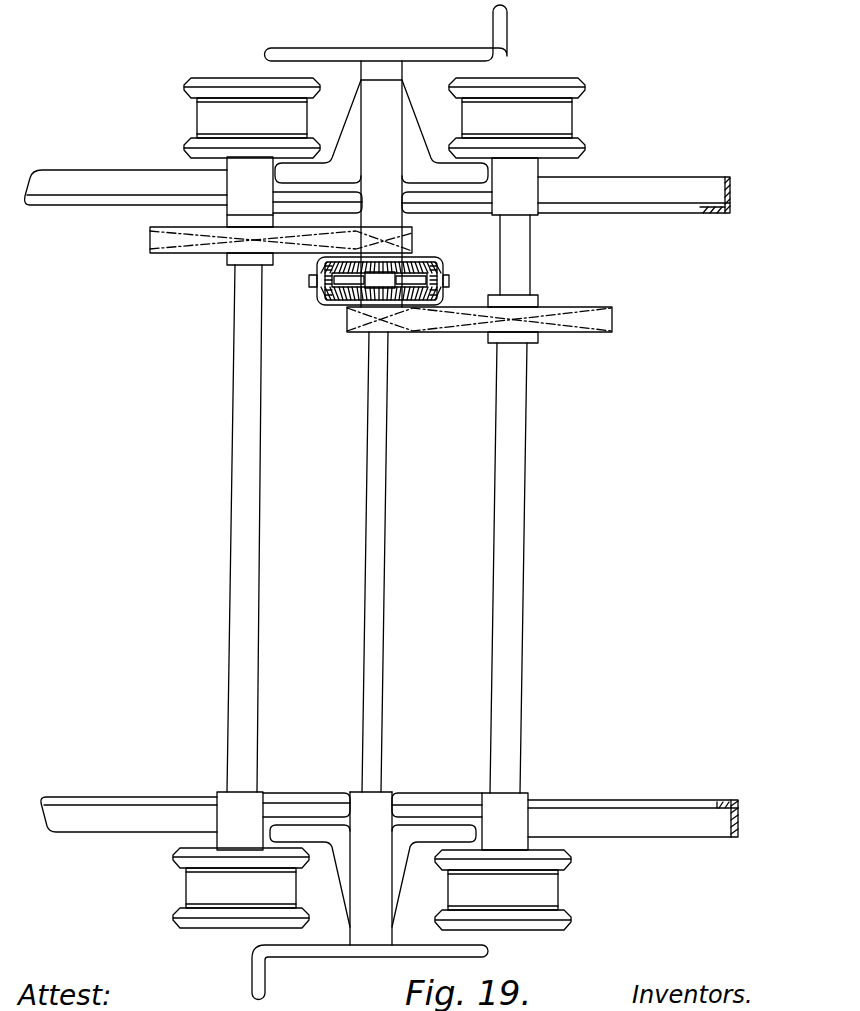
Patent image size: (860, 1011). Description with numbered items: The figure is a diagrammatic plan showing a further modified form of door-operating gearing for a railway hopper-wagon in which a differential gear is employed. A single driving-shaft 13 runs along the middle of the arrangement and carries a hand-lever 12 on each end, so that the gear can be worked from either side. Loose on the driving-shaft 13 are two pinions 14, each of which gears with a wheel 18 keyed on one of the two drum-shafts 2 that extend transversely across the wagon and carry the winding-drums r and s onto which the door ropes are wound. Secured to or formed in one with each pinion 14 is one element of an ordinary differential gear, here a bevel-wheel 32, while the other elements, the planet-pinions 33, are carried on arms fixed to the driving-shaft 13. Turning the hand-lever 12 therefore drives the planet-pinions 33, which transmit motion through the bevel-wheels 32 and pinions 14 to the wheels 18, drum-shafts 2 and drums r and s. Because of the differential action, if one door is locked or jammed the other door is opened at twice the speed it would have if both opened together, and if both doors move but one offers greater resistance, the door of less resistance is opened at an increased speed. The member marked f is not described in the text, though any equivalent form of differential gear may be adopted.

The hand-lever 12 is at (500, 32).
The pinion 14 is at (395, 247).
The wheel 18 is at (187, 236).
The bevel-wheel 32 is at (428, 258).
The planet-pinion 33 is at (447, 276).
The driving-shaft 13 is at (382, 567).
The drum-shaft 2 is at (260, 445).
The winding-drum r is at (207, 113).
The winding-drum s is at (560, 115).
The shelf rail f is at (652, 190).